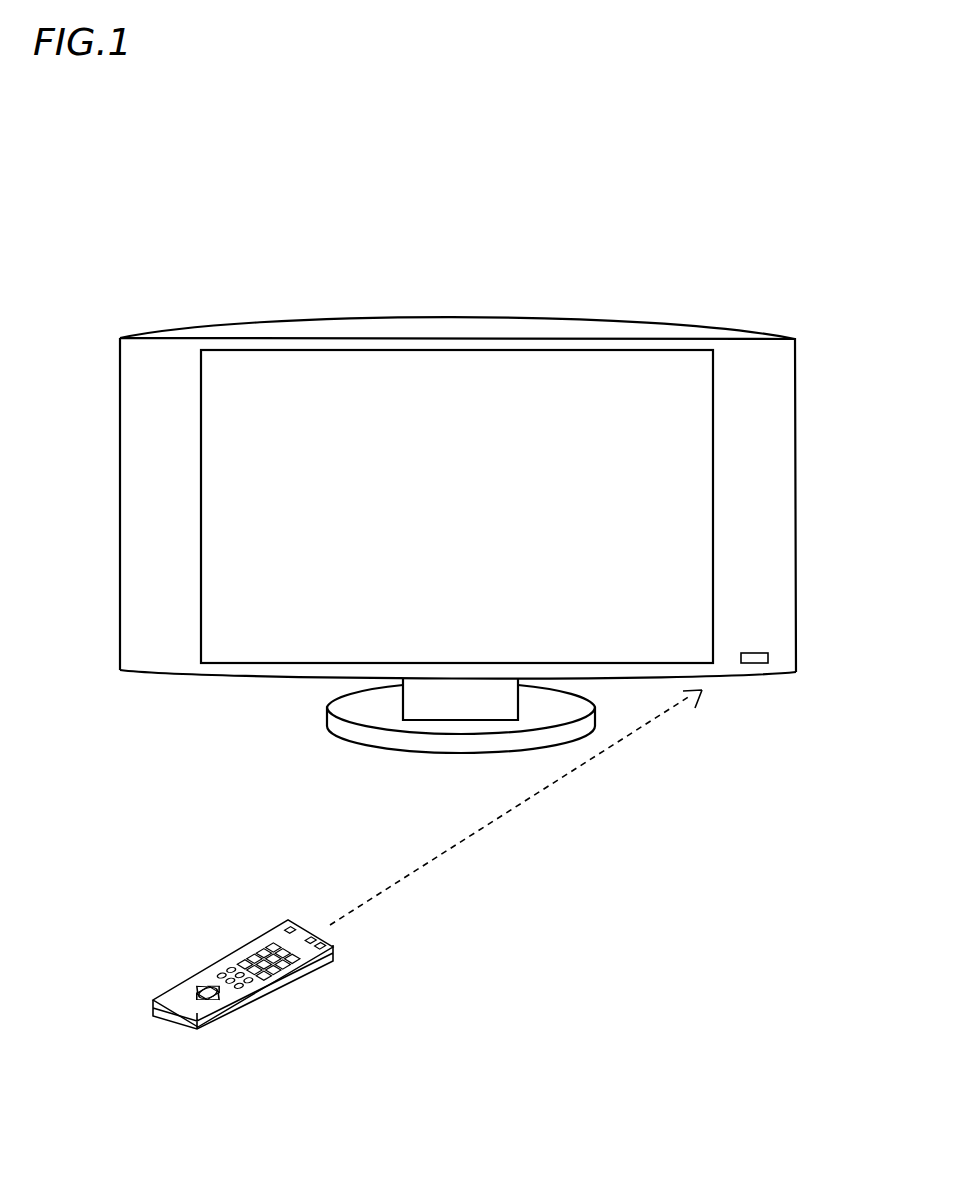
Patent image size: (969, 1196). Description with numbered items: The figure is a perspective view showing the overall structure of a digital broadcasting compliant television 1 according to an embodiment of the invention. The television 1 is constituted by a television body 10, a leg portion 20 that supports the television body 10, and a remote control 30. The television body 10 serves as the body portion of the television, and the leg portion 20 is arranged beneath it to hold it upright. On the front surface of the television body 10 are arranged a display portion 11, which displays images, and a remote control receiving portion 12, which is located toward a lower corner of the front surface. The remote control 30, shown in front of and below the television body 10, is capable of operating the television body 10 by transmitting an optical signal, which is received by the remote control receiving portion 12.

The digital broadcasting compliant television 1 is at (493, 220).
The television body 10 is at (775, 370).
The display portion 11 is at (713, 438).
The remote control receiving portion 12 is at (763, 657).
The leg portion 20 is at (464, 702).
The remote control 30 is at (308, 950).